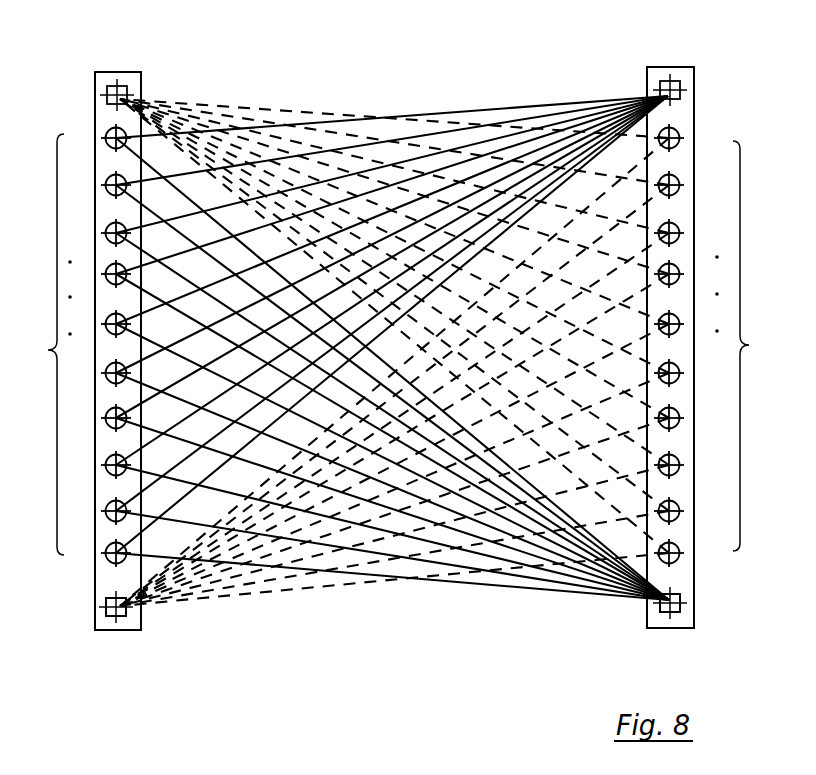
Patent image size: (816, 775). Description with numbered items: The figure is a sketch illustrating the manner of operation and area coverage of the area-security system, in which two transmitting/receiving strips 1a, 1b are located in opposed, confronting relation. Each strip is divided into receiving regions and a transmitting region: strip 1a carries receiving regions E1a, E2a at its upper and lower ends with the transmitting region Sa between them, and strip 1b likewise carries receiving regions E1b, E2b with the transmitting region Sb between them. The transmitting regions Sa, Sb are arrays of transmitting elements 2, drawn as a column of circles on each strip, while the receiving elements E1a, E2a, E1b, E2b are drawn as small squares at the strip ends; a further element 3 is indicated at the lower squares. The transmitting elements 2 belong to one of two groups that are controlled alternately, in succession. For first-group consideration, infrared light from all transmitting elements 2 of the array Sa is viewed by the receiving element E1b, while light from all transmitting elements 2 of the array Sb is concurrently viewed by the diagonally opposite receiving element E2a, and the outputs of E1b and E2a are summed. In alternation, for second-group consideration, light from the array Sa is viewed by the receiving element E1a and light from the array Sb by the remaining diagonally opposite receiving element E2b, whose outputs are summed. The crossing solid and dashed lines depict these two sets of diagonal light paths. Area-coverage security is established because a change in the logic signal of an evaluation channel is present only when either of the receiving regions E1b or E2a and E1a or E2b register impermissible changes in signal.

The transmitting/receiving strip 1a is at (131, 79).
The transmitting/receiving strip 1b is at (685, 76).
The transmitting element 2 is at (102, 138).
The terminal crosspoint 3 is at (124, 616).
The receiving region E1a is at (108, 93).
The receiving region E2a is at (106, 607).
The receiving region E1b is at (681, 88).
The receiving region E2b is at (681, 608).
The transmitting region Sa is at (38, 344).
The transmitting region Sb is at (757, 346).